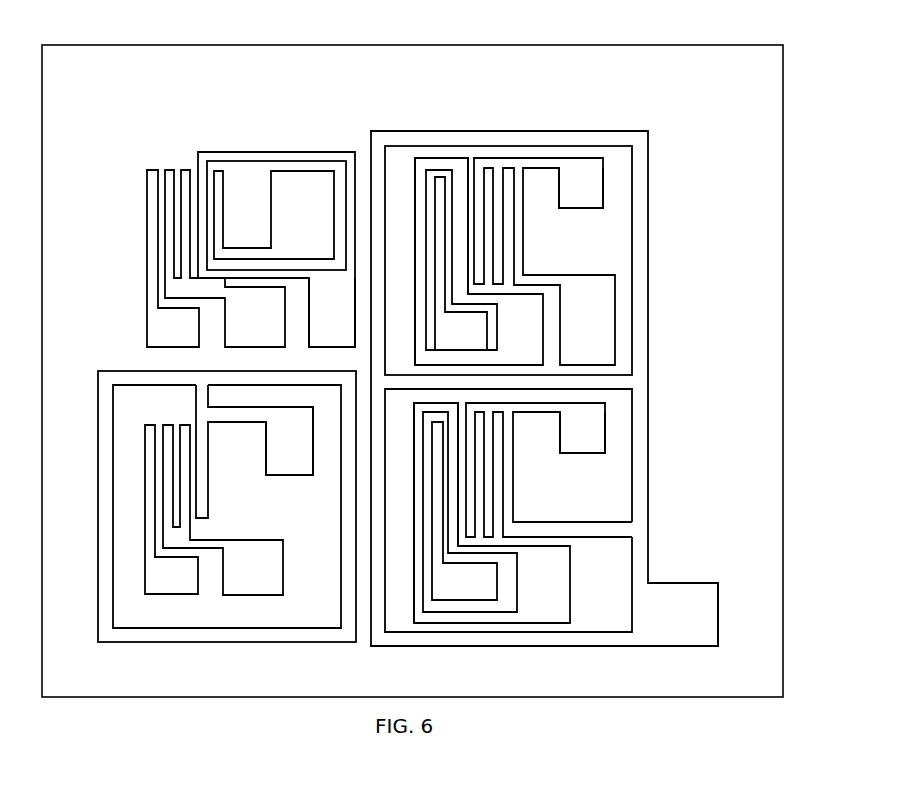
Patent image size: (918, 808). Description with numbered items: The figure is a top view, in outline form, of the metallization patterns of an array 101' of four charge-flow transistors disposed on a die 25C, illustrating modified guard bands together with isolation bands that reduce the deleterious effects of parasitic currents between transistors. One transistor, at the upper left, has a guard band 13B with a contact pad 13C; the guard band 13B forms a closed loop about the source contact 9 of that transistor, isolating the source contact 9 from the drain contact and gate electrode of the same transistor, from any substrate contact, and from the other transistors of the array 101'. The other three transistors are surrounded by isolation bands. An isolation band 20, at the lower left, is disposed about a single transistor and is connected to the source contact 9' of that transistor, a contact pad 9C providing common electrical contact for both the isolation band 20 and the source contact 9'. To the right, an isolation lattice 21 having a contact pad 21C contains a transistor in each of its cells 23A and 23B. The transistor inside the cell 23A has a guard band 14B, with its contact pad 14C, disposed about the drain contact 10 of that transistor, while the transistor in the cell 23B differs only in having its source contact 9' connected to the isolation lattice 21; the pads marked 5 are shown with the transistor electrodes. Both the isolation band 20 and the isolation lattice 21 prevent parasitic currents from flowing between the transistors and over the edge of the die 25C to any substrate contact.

The die 25C is at (786, 279).
The guard band 13B is at (312, 152).
The contact pad 13C is at (350, 325).
The source contact 9 is at (414, 261).
The source contact 9' is at (414, 461).
The contact pad 9C is at (302, 455).
The drain contact 10 is at (179, 338).
The finger electrode with pad 5 is at (262, 338).
The array 101' is at (545, 381).
The isolation lattice 21 is at (647, 423).
The contact pad 21C is at (672, 605).
The cell 23A is at (602, 240).
The cell 23B is at (605, 485).
The guard band 14B is at (443, 158).
The contact pad 14C is at (533, 343).
The isolation band 20 is at (98, 437).